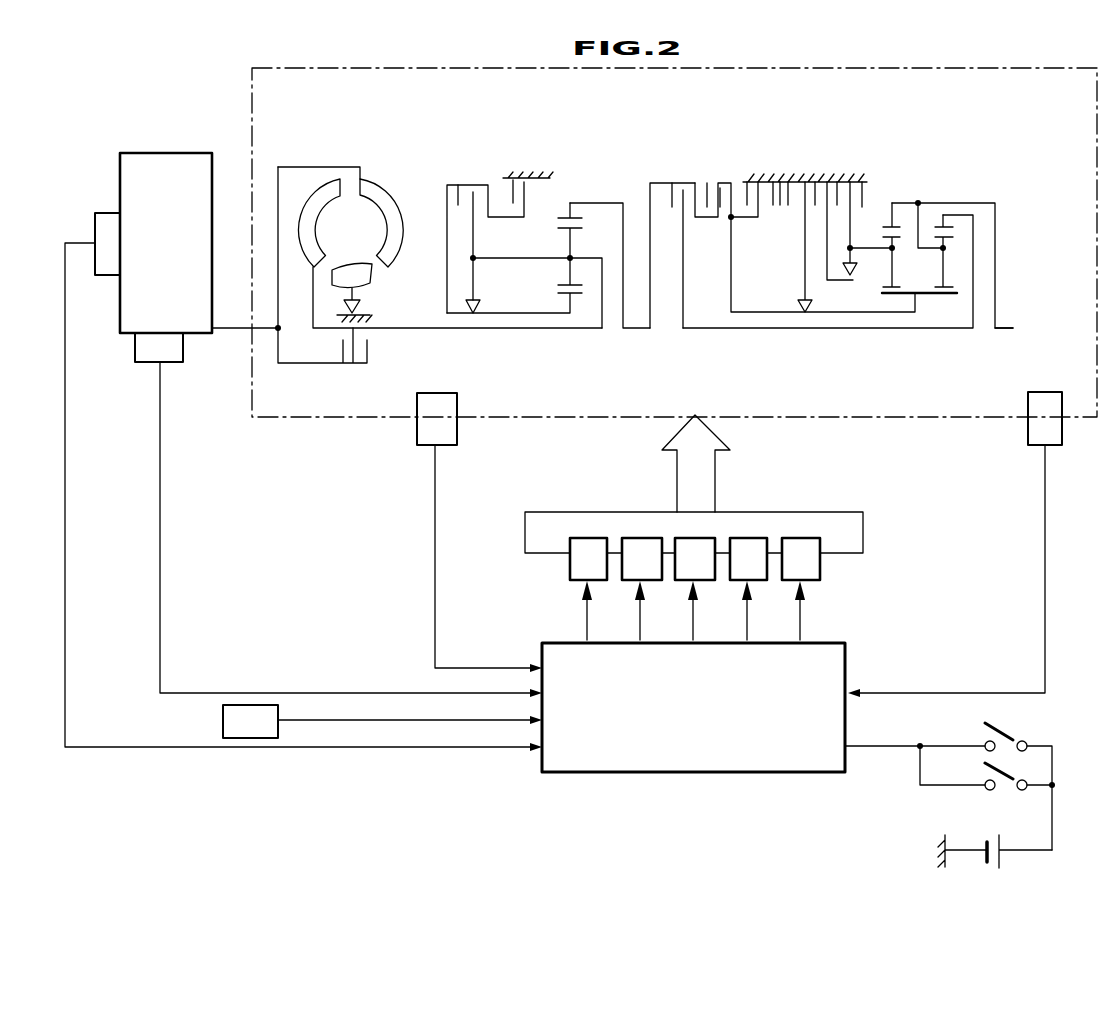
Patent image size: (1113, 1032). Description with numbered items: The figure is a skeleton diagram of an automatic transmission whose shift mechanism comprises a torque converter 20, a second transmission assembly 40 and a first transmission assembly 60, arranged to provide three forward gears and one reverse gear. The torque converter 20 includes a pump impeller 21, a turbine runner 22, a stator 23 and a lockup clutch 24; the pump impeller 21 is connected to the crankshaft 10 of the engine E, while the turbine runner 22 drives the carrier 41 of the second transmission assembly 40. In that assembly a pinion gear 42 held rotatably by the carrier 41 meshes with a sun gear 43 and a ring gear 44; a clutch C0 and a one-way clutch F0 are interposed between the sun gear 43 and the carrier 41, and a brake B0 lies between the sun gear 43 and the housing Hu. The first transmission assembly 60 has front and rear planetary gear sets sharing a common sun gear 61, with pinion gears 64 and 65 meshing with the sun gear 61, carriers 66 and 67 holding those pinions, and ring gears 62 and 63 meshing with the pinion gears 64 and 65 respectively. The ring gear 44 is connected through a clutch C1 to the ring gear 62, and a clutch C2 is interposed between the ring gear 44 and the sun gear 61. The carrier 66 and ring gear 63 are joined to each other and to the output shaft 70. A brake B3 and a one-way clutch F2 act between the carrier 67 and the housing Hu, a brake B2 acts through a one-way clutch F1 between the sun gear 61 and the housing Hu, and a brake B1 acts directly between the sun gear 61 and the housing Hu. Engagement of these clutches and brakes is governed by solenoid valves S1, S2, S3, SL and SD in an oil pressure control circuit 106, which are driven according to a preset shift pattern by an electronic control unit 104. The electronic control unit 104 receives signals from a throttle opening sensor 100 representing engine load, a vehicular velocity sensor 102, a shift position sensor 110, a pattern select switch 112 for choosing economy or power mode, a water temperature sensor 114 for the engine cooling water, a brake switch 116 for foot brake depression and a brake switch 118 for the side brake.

The engine E is at (152, 168).
The crankshaft 10 is at (232, 330).
The torque converter 20 is at (440, 246).
The pump impeller 21 is at (372, 185).
The turbine runner 22 is at (318, 205).
The stator 23 is at (370, 278).
The lockup clutch 24 is at (310, 364).
The second transmission assembly 40 is at (648, 210).
The carrier 41 is at (588, 259).
The pinion gear 42 is at (560, 235).
The sun gear 43 is at (562, 293).
The ring gear 44 is at (561, 216).
The clutch C0 is at (470, 185).
The brake B0 is at (535, 190).
The one-way clutch F0 is at (484, 295).
The housing Hu is at (760, 181).
The clutch C1 is at (676, 183).
The clutch C2 is at (707, 183).
The brake B1 is at (778, 198).
The brake B2 is at (815, 198).
The brake B3 is at (862, 197).
The one-way clutch F1 is at (797, 301).
The one-way clutch F2 is at (856, 272).
The first transmission assembly 60 is at (859, 234).
The sun gear 61 is at (922, 297).
The ring gear 62 is at (935, 226).
The ring gear 63 is at (884, 226).
The pinion gear 64 is at (947, 247).
The pinion gear 65 is at (897, 248).
The carrier 66 is at (928, 253).
The carrier 67 is at (880, 248).
The output shaft 70 is at (1002, 329).
The throttle opening sensor 100 is at (140, 352).
The vehicular velocity sensor 102 is at (1045, 393).
The electronic control unit 104 is at (683, 773).
The oil pressure control circuit 106 is at (726, 527).
The shift position sensor 110 is at (436, 395).
The pattern select switch 112 is at (224, 720).
The water temperature sensor 114 is at (100, 222).
The brake switch 116 is at (1012, 729).
The brake switch 118 is at (1003, 783).
The solenoid valve S1 is at (588, 589).
The solenoid valve S2 is at (642, 589).
The solenoid valve S3 is at (695, 589).
The solenoid valve SL is at (748, 589).
The linear solenoid valve SD is at (801, 589).